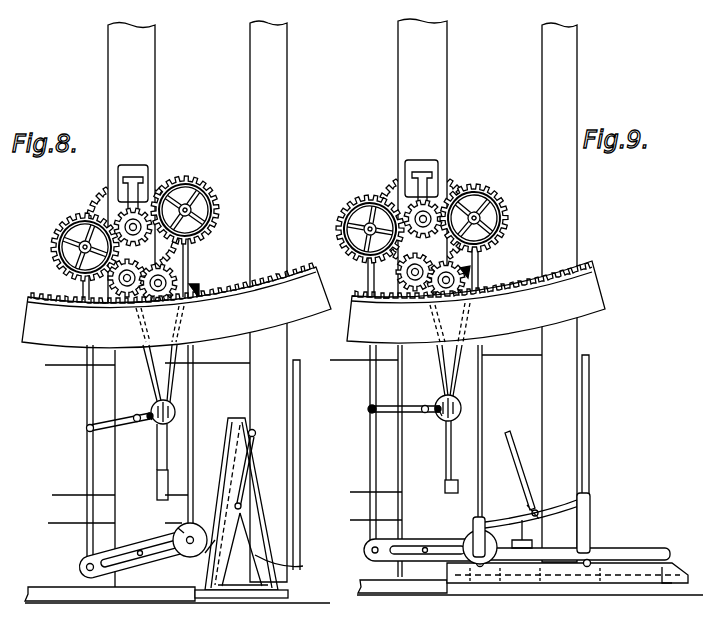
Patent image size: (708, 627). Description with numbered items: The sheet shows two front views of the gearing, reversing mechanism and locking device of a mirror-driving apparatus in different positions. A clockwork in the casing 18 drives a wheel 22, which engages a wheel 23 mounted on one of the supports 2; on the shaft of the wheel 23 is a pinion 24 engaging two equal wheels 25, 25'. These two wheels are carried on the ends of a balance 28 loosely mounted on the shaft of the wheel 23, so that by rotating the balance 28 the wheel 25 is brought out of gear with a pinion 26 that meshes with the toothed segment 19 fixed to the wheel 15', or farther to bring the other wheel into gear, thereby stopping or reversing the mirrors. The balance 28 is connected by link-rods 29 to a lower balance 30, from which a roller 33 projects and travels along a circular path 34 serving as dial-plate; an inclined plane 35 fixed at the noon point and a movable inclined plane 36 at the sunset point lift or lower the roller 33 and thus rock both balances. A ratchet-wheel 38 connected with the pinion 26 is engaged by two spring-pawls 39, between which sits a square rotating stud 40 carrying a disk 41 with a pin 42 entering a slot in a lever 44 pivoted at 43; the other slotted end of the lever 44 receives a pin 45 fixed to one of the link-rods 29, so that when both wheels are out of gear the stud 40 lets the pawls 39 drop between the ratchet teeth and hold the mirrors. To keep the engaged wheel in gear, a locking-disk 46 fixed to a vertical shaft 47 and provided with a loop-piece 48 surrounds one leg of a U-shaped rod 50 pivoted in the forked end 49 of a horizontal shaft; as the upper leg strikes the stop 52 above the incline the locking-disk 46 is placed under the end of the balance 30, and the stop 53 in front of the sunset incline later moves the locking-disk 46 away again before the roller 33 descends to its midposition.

In FIG. 8, the support 2 is at (197, 301).
In FIG. 9, the support 2 is at (487, 290).
In FIG. 8, the wheel 15' is at (176, 305).
In FIG. 9, the wheel 15' is at (476, 302).
In FIG. 8, the casing 18 is at (300, 421).
In FIG. 9, the casing 18 is at (589, 395).
In FIG. 8, the toothed segment 19 is at (160, 324).
In FIG. 9, the toothed segment 19 is at (450, 322).
In FIG. 8, the wheel 22 is at (106, 306).
In FIG. 9, the wheel 22 is at (387, 303).
In FIG. 8, the wheel 23 is at (97, 193).
In FIG. 9, the wheel 23 is at (392, 186).
In FIG. 8, the pinion 24 is at (135, 236).
In FIG. 9, the pinion 24 is at (423, 229).
In FIG. 8, the wheel 25 is at (193, 210).
In FIG. 9, the wheel 25 is at (480, 218).
In FIG. 8, the wheel 25' is at (75, 247).
In FIG. 9, the wheel 25' is at (357, 229).
In FIG. 8, the pinion 26 is at (168, 280).
In FIG. 9, the pinion 26 is at (470, 276).
In FIG. 8, the balance 28 is at (74, 242).
In FIG. 9, the balance 28 is at (487, 190).
In FIG. 8, the link-rod 29 is at (194, 448).
In FIG. 9, the link-rod 29 is at (468, 404).
In FIG. 8, the balance 30 is at (152, 540).
In FIG. 9, the balance 30 is at (445, 541).
In FIG. 8, the roller 33 is at (196, 524).
In FIG. 9, the roller 33 is at (475, 540).
In FIG. 9, the circular path 34 is at (403, 590).
In FIG. 8, the inclined plane 35 is at (282, 573).
In FIG. 9, the movable inclined plane 36 is at (537, 523).
In FIG. 8, the ratchet-wheel 38 is at (176, 272).
In FIG. 9, the ratchet-wheel 38 is at (478, 265).
In FIG. 8, the spring-pawl 39 is at (152, 386).
In FIG. 9, the spring-pawl 39 is at (440, 380).
In FIG. 8, the rotating stud 40 is at (173, 410).
In FIG. 9, the rotating stud 40 is at (462, 405).
In FIG. 8, the disk 41 is at (176, 418).
In FIG. 9, the disk 41 is at (462, 416).
In FIG. 8, the pin 42 is at (150, 420).
In FIG. 9, the pin 42 is at (438, 413).
In FIG. 8, the pivot 43 is at (136, 422).
In FIG. 9, the pivot 43 is at (424, 413).
In FIG. 8, the lever 44 is at (110, 431).
In FIG. 9, the lever 44 is at (395, 413).
In FIG. 8, the pin 45 is at (88, 432).
In FIG. 9, the pin 45 is at (368, 414).
In FIG. 8, the locking-disk 46 is at (205, 553).
In FIG. 9, the locking-disk 46 is at (527, 590).
In FIG. 8, the vertical shaft 47 is at (233, 506).
In FIG. 9, the vertical shaft 47 is at (522, 534).
In FIG. 9, the loop-piece 48 is at (545, 550).
In FIG. 8, the forked end 49 is at (243, 508).
In FIG. 9, the forked end 49 is at (540, 488).
In FIG. 8, the U-shaped rod 50 is at (255, 437).
In FIG. 9, the U-shaped rod 50 is at (513, 452).
In FIG. 8, the stop 52 is at (244, 420).
In FIG. 9, the stop 53 is at (667, 590).